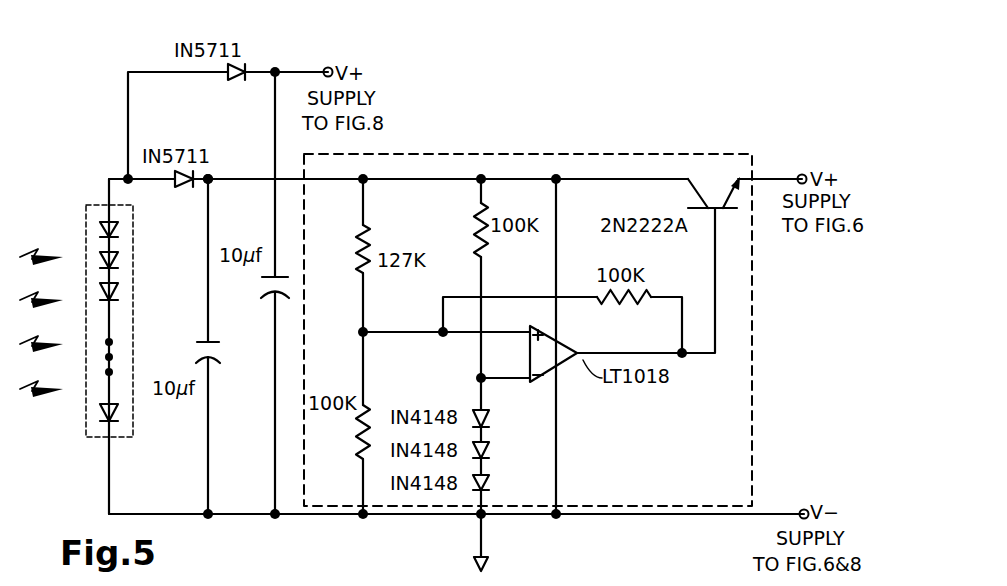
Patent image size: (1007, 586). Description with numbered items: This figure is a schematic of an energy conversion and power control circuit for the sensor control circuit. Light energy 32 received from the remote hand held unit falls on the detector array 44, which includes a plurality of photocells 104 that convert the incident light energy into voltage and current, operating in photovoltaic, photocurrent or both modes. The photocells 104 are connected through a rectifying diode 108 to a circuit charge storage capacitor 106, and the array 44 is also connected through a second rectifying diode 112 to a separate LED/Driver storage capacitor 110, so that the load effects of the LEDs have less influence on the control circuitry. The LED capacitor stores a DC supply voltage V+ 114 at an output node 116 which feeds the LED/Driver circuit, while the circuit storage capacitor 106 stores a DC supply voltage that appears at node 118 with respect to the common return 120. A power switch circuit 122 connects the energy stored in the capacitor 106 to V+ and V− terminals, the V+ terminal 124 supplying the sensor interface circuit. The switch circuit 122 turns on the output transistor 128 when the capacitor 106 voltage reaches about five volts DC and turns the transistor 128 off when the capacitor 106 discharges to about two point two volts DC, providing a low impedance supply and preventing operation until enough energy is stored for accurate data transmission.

The light energy 32 is at (35, 220).
The detector array 44 is at (118, 343).
The photocells 104 is at (118, 228).
The circuit charge storage capacitor 106 is at (207, 340).
The rectifying diode 108 is at (184, 182).
The LED/Driver storage capacitor 110 is at (275, 296).
The second rectifying diode 112 is at (235, 76).
The DC supply voltage V+ 114 is at (378, 58).
The output node 116 is at (327, 67).
The node 118 is at (213, 177).
The common return 120 is at (475, 517).
The power switch circuit 122 is at (603, 143).
The V+ supply terminal to FIG. 6 124 is at (800, 175).
The output transistor 128 is at (725, 211).